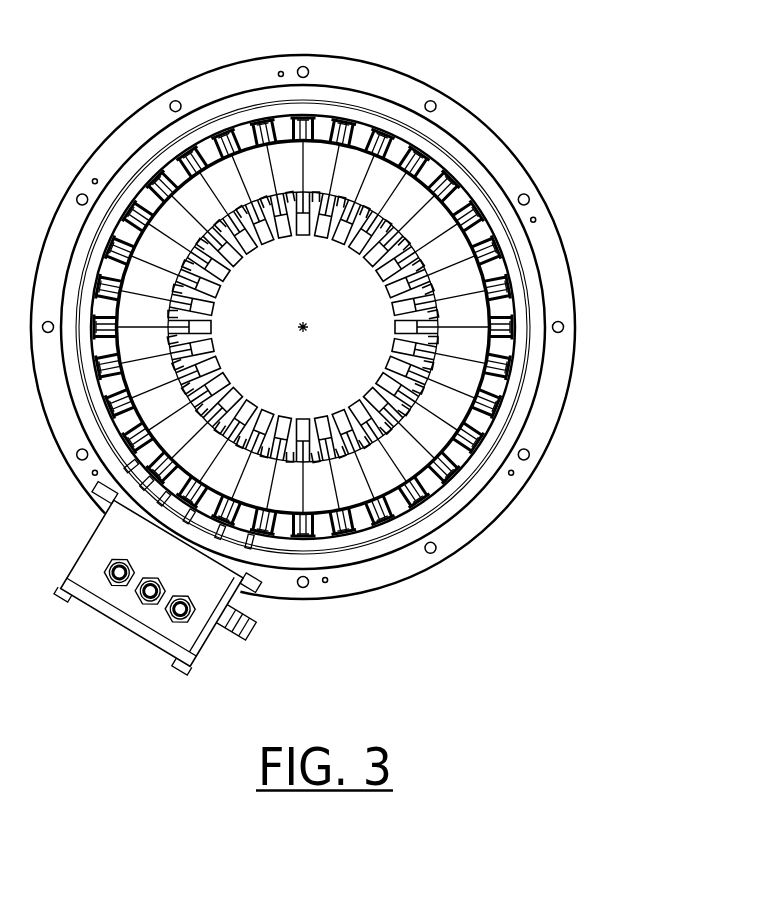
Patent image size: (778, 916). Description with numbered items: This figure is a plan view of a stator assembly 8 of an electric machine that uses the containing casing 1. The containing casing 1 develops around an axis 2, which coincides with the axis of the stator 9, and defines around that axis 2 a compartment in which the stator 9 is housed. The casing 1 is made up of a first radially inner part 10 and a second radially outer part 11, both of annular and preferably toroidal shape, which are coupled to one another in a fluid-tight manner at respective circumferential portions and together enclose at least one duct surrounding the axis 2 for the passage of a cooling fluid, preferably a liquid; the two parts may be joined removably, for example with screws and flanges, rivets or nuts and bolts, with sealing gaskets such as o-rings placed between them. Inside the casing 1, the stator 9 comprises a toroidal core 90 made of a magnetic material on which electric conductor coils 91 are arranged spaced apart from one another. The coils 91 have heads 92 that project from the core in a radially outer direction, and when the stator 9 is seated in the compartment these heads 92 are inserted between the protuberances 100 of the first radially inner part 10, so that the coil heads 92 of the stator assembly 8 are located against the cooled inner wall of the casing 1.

The stator assembly 8 is at (61, 74).
The containing casing 1 is at (411, 95).
The second radially outer part 11 is at (353, 97).
The first radially inner part 10 is at (510, 367).
The stator 9 is at (447, 228).
The heads 92 is at (158, 200).
The protuberances 100 is at (166, 180).
The toroidal core 90 is at (438, 425).
The electric conductor coils 91 is at (237, 266).
The axis 2 is at (308, 325).